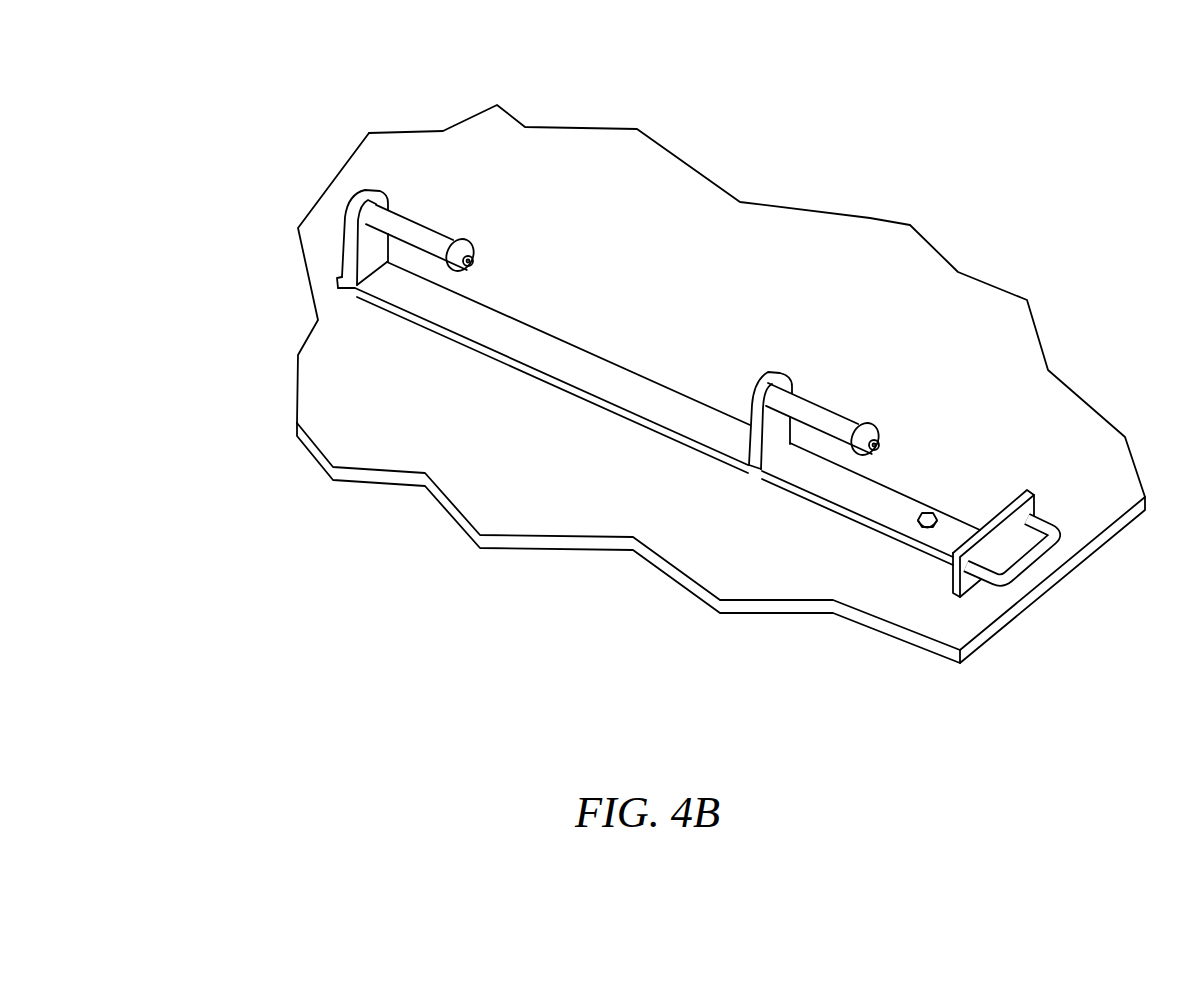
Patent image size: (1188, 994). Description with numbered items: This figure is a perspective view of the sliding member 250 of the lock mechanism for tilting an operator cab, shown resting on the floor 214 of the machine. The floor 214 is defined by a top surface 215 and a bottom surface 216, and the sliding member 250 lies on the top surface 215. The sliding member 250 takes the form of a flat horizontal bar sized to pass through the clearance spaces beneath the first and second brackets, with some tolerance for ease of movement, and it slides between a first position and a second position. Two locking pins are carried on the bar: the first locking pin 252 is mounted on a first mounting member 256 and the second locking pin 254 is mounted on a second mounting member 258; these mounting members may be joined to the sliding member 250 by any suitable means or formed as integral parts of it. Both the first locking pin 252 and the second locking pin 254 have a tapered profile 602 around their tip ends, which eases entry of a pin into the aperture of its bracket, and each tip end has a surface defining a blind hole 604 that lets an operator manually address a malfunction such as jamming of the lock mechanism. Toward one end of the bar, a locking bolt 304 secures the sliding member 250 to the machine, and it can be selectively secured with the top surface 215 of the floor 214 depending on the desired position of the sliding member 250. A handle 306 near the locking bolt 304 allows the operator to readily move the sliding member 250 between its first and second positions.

The floor 214 is at (316, 451).
The top surface 215 is at (342, 388).
The bottom surface 216 is at (390, 488).
The sliding member 250 is at (563, 393).
The first locking pin 252 is at (829, 398).
The second locking pin 254 is at (434, 214).
The first mounting member 256 is at (752, 447).
The second mounting member 258 is at (348, 249).
The locking bolt 304 is at (913, 509).
The handle 306 is at (1053, 552).
The tapered profile 602 is at (463, 245).
The blind hole 604 is at (474, 262).